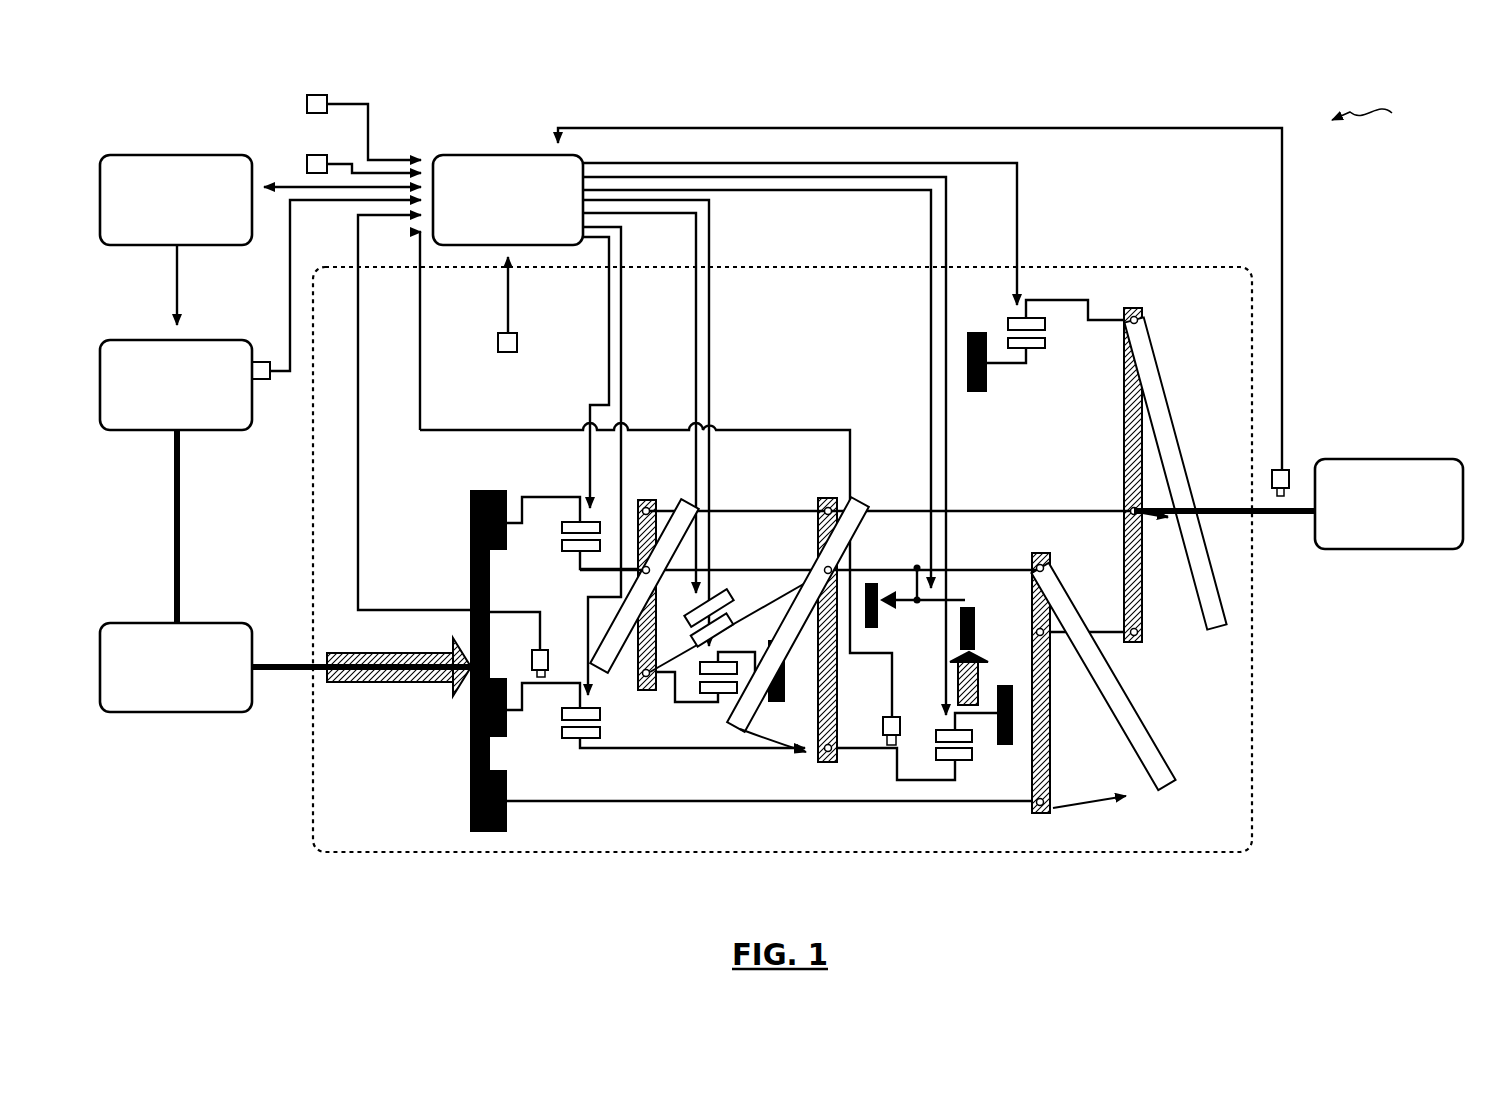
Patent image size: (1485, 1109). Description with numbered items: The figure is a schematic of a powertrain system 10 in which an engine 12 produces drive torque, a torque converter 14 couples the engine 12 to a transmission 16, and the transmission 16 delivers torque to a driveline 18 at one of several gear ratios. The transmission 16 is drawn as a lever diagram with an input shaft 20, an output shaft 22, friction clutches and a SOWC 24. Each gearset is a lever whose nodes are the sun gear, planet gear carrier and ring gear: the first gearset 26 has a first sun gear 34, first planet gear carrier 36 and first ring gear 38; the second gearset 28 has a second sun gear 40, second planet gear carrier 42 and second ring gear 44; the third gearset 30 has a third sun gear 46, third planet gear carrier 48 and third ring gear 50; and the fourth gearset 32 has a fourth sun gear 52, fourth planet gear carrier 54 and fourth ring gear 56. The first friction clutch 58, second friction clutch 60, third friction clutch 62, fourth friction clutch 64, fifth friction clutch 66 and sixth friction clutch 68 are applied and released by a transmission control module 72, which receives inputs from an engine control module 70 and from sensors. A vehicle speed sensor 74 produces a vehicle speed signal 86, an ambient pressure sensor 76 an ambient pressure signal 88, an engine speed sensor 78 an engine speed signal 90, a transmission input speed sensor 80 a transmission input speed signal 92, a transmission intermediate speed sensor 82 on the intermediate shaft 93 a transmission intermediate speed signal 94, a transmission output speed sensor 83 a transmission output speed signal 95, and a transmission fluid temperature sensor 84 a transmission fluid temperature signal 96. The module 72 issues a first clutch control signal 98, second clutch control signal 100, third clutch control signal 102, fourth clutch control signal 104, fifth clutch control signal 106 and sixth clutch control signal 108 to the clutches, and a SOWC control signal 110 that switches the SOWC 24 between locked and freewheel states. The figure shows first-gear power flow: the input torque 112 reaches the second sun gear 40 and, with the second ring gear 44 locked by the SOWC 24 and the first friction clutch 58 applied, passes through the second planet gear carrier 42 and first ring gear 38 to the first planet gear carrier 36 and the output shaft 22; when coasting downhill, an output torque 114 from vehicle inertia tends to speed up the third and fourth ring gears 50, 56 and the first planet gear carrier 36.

The powertrain system 10 is at (1381, 113).
The engine 12 is at (147, 340).
The torque converter 14 is at (147, 623).
The transmission 16 is at (760, 266).
The driveline 18 is at (1366, 459).
The input shaft 20 is at (290, 673).
The output shaft 22 is at (1285, 525).
The SOWC 24 is at (953, 602).
The first gearset 26 is at (1123, 452).
The second gearset 28 is at (1052, 747).
The third gearset 30 is at (838, 715).
The fourth gearset 32 is at (657, 605).
The first sun gear 34 is at (1140, 319).
The first planet gear carrier 36 is at (1125, 515).
The first ring gear 38 is at (1143, 637).
The second sun gear 40 is at (1050, 802).
The second planet gear carrier 42 is at (1032, 622).
The second ring gear 44 is at (1047, 567).
The third sun gear 46 is at (838, 745).
The third planet gear carrier 48 is at (820, 565).
The third ring gear 50 is at (818, 498).
The fourth sun gear 52 is at (637, 678).
The fourth planet gear carrier 54 is at (650, 572).
The fourth ring gear 56 is at (655, 505).
The first friction clutch 58 is at (1035, 350).
The second friction clutch 60 is at (730, 697).
The third friction clutch 62 is at (965, 762).
The fourth friction clutch 64 is at (742, 617).
The fifth friction clutch 66 is at (567, 740).
The sixth friction clutch 68 is at (570, 555).
The engine control module 70 is at (147, 155).
The transmission control module 72 is at (481, 155).
The vehicle speed sensor 74 is at (307, 104).
The ambient pressure sensor 76 is at (307, 164).
The engine speed sensor 78 is at (257, 360).
The transmission input speed sensor 80 is at (543, 645).
The transmission intermediate speed sensor 82 is at (900, 715).
The transmission output speed sensor 83 is at (1289, 466).
The transmission fluid temperature sensor 84 is at (498, 340).
The vehicle speed signal 86 is at (370, 134).
The ambient pressure signal 88 is at (338, 163).
The engine speed signal 90 is at (290, 312).
The transmission input speed signal 92 is at (360, 483).
The intermediate shaft 93 is at (873, 753).
The transmission intermediate speed signal 94 is at (422, 406).
The transmission output speed signal 95 is at (1283, 236).
The transmission fluid temperature signal 96 is at (510, 308).
The first clutch control signal 98 is at (1021, 244).
The second clutch control signal 100 is at (712, 348).
The third clutch control signal 102 is at (948, 448).
The fourth clutch control signal 104 is at (695, 348).
The fifth clutch control signal 106 is at (622, 388).
The sixth clutch control signal 108 is at (608, 386).
The SOWC control signal 110 is at (930, 447).
The input torque 112 is at (393, 683).
The output torque 114 is at (1157, 528).